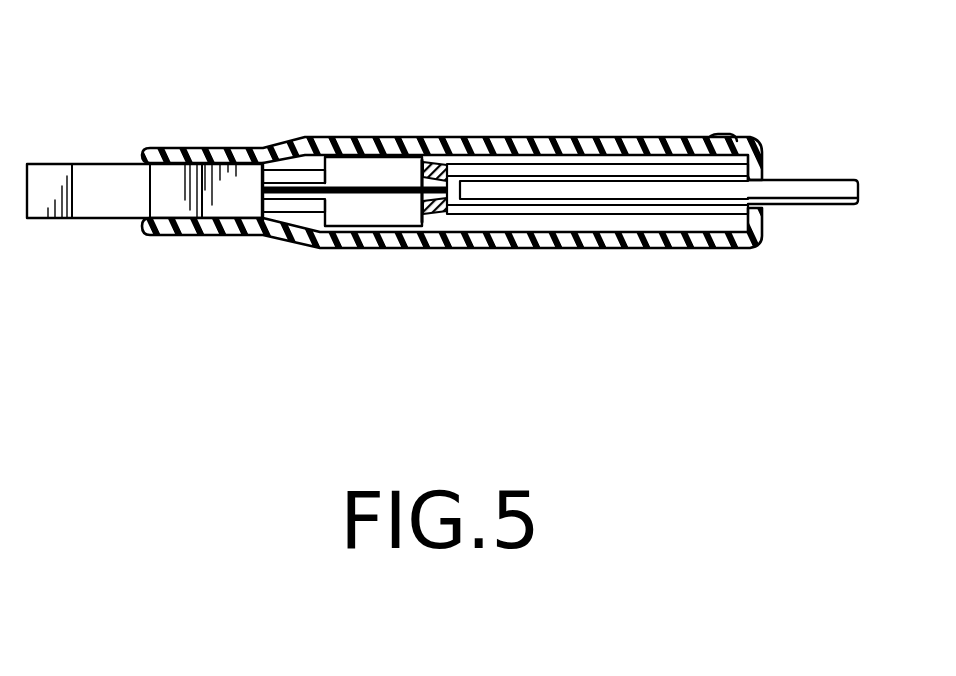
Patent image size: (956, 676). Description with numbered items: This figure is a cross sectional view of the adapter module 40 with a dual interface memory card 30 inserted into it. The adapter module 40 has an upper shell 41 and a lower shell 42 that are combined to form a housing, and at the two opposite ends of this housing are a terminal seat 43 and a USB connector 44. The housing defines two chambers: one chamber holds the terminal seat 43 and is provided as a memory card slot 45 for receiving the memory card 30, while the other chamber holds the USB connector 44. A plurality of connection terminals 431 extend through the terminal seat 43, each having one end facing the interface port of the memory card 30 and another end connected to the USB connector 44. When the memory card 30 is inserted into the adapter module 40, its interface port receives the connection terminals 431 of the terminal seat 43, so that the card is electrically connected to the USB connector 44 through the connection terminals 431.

The adapter module 40 is at (503, 108).
The upper shell 41 is at (661, 147).
The lower shell 42 is at (645, 250).
The terminal seat 43 is at (437, 165).
The connection terminals 431 is at (370, 187).
The USB connector 44 is at (94, 175).
The memory card slot 45 is at (713, 152).
The memory card 30 is at (832, 188).